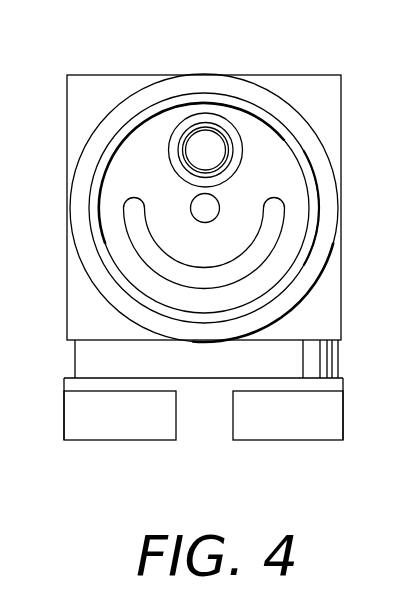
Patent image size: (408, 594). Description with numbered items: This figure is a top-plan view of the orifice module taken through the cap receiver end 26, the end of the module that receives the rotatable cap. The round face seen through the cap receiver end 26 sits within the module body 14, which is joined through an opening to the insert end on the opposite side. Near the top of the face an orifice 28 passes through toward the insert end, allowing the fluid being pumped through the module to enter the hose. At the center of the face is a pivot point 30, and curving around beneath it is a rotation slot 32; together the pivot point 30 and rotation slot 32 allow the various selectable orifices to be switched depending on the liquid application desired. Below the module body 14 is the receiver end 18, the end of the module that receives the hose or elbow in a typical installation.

The module body 14 is at (73, 283).
The receiver end 18 is at (306, 442).
The cap receiver end 26 is at (190, 75).
The orifice 28 is at (229, 150).
The pivot point 30 is at (194, 198).
The rotation slot 32 is at (214, 263).